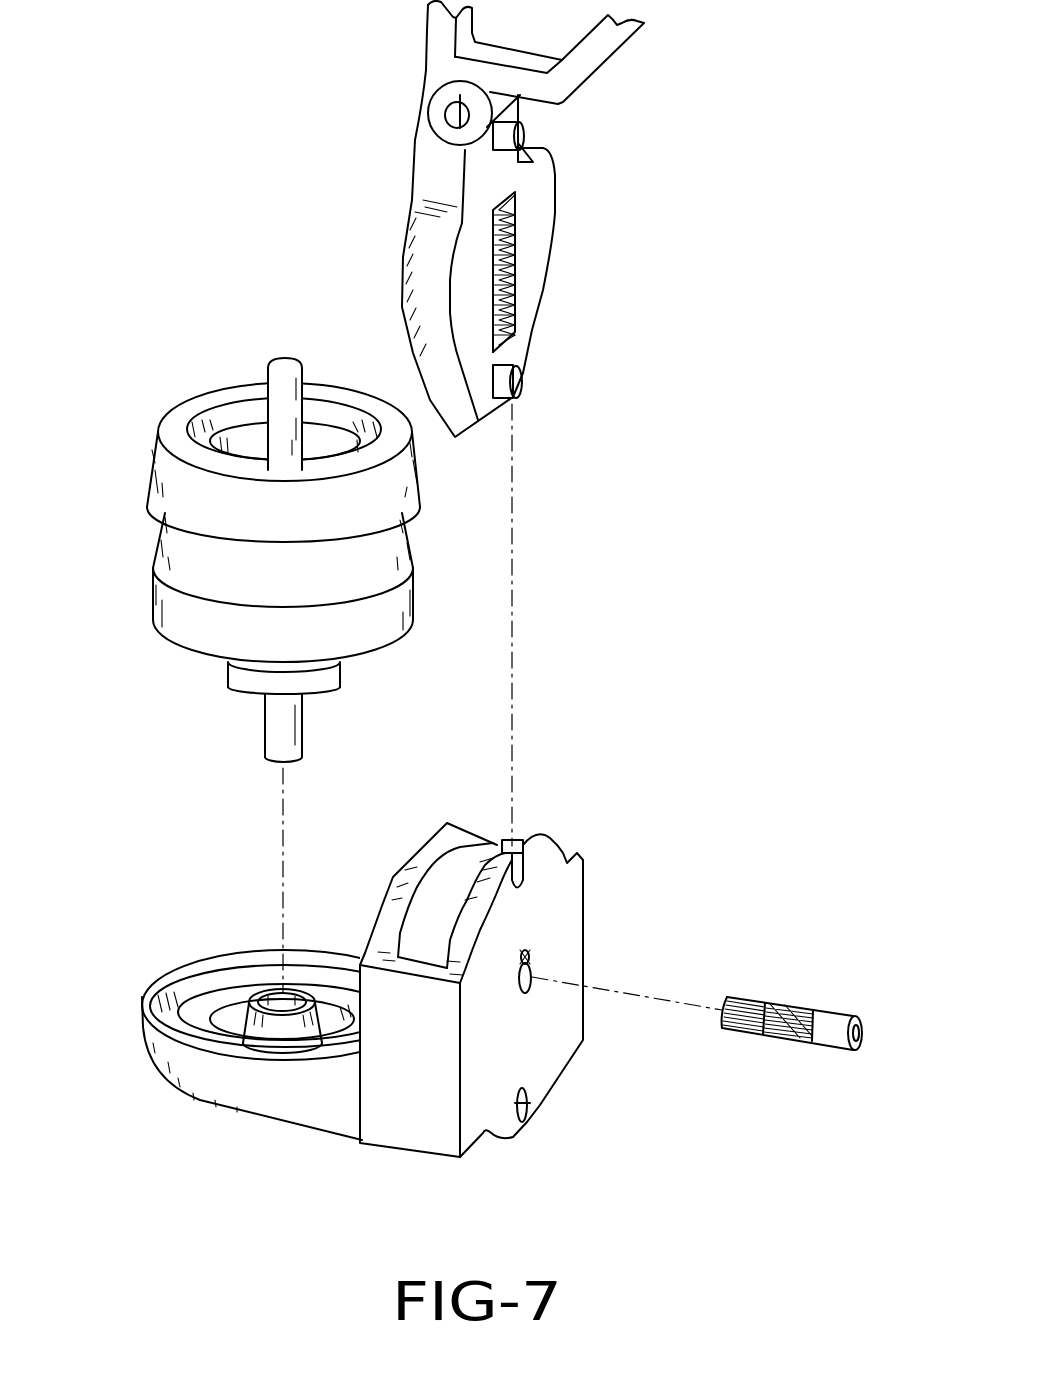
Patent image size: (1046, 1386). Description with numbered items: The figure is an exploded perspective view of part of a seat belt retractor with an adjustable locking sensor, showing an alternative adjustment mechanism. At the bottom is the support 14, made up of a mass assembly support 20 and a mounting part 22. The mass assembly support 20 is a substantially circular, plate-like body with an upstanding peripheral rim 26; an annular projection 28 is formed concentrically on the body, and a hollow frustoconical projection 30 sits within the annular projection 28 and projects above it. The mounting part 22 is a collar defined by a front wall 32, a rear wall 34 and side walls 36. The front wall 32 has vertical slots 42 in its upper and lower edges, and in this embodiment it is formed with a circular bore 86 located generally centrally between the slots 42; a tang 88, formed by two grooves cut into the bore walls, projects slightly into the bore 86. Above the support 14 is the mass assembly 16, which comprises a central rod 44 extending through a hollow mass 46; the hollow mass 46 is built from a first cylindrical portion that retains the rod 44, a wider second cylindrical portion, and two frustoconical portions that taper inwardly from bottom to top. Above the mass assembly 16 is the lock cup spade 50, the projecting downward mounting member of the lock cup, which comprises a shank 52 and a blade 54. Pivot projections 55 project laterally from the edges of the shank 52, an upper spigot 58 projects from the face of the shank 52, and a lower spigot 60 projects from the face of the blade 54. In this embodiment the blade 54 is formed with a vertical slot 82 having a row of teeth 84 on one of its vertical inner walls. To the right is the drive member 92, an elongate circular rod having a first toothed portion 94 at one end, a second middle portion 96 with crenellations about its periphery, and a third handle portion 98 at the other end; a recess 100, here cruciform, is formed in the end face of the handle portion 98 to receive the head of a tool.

The support 14 is at (411, 988).
The mass assembly 16 is at (299, 675).
The mass assembly support 20 is at (263, 1057).
The mounting part 22 is at (492, 988).
The peripheral rim 26 is at (168, 975).
The annular projection 28 is at (197, 1021).
The hollow frustoconical projection 30 is at (273, 992).
The front wall 32 is at (549, 1053).
The rear wall 34 is at (463, 838).
The side wall 36 is at (400, 1127).
The vertical slots 42 is at (523, 845).
The central rod 44 is at (304, 730).
The hollow mass 46 is at (167, 528).
The lock cup spade 50 is at (500, 423).
The shank 52 is at (438, 168).
The blade 54 is at (555, 232).
The pivot projections 55 is at (455, 115).
The upper spigot 58 is at (523, 138).
The lower spigot 60 is at (521, 385).
The vertical slot 82 is at (510, 336).
The teeth 84 is at (512, 240).
The circular bore 86 is at (588, 968).
The tang 88 is at (526, 952).
The drive member 92 is at (799, 1013).
The first toothed portion 94 is at (745, 1030).
The second middle portion 96 is at (790, 1040).
The third handle portion 98 is at (827, 1052).
The recess 100 is at (864, 1035).